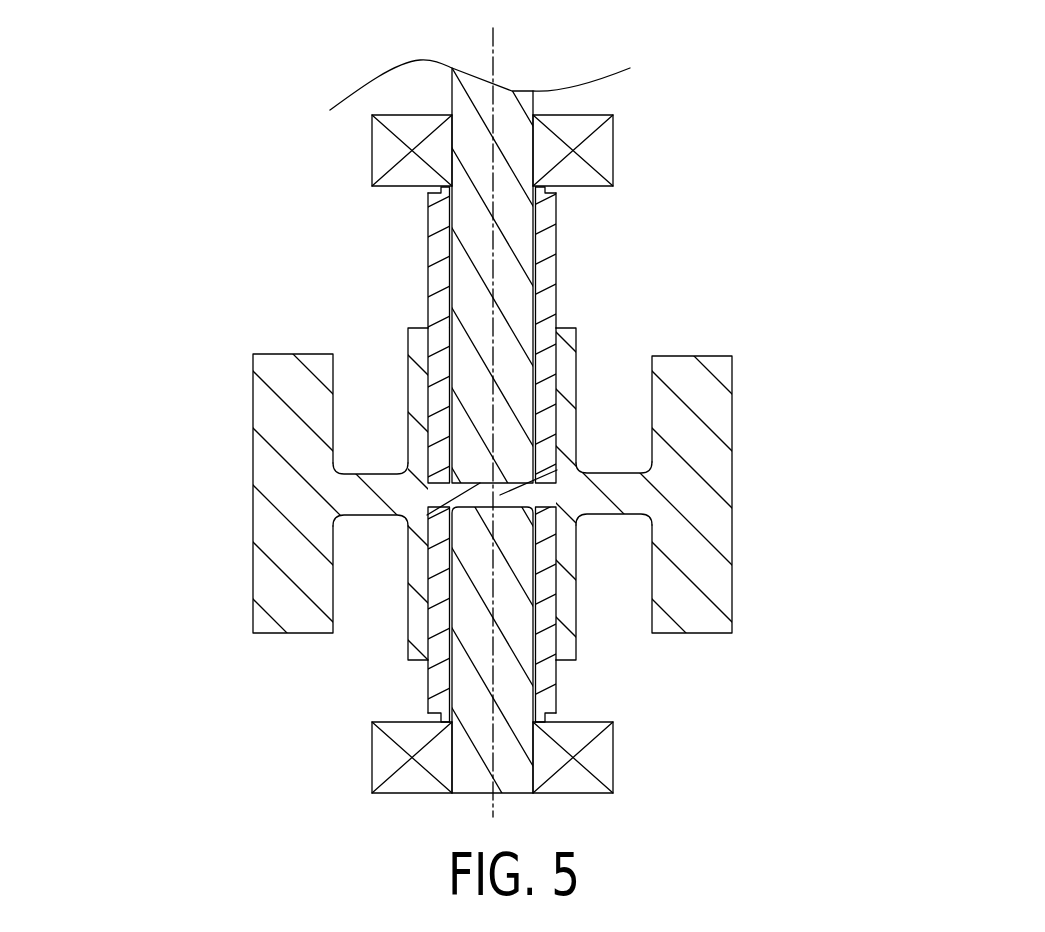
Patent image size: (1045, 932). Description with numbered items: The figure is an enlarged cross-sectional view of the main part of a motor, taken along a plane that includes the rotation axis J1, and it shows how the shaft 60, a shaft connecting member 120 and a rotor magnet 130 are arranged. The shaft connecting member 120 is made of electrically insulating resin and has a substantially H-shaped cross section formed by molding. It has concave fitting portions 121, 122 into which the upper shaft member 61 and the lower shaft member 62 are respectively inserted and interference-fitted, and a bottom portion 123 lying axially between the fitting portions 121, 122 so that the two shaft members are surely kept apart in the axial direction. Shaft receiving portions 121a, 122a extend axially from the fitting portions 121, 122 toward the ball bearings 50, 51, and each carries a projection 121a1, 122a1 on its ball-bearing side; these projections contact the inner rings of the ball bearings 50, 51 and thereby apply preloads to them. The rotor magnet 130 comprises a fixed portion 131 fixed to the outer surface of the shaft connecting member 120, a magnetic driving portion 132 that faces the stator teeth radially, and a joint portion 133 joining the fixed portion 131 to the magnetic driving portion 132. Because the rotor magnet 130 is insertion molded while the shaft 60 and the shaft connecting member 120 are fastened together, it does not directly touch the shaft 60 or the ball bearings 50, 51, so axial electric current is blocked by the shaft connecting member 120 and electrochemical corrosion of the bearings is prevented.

The rotation axis J1 is at (493, 45).
The ball bearing 50 is at (382, 157).
The ball bearing 51 is at (382, 760).
The shaft 60 is at (557, 429).
The upper shaft member 61 is at (515, 230).
The lower shaft member 62 is at (512, 762).
The shaft connecting member 120 is at (450, 455).
The fitting portion 121 is at (483, 319).
The shaft receiving portion 121a is at (483, 241).
The projection 121a1 is at (545, 193).
The fitting portion 122 is at (311, 629).
The shaft receiving portion 122a is at (309, 708).
The projection 122a1 is at (309, 734).
The bottom portion 123 is at (500, 493).
The rotor magnet 130 is at (586, 466).
The fixed portion 131 is at (573, 605).
The magnetic driving portion 132 is at (707, 513).
The joint portion 133 is at (620, 490).